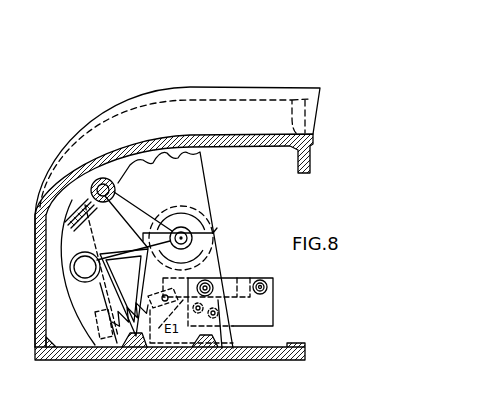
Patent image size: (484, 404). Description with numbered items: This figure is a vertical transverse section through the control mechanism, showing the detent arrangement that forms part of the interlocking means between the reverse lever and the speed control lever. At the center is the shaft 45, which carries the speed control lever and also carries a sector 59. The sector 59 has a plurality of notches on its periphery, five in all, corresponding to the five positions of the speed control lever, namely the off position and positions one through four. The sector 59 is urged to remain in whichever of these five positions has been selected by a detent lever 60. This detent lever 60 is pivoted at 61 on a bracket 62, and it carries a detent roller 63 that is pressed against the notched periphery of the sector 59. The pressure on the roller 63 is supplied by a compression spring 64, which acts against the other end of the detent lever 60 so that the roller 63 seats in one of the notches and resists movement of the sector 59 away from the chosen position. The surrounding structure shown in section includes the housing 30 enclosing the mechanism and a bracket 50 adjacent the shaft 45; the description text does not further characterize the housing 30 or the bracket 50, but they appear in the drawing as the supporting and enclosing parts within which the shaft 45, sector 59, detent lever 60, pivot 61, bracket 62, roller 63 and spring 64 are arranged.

The housing 30 is at (33, 212).
The shaft 45 is at (187, 234).
The mounting bracket 50 is at (220, 263).
The sector 59 is at (204, 176).
The detent lever 60 is at (85, 309).
The pivot 61 is at (80, 278).
The bracket 62 is at (119, 248).
The detent roller 63 is at (111, 181).
The compression spring 64 is at (118, 348).